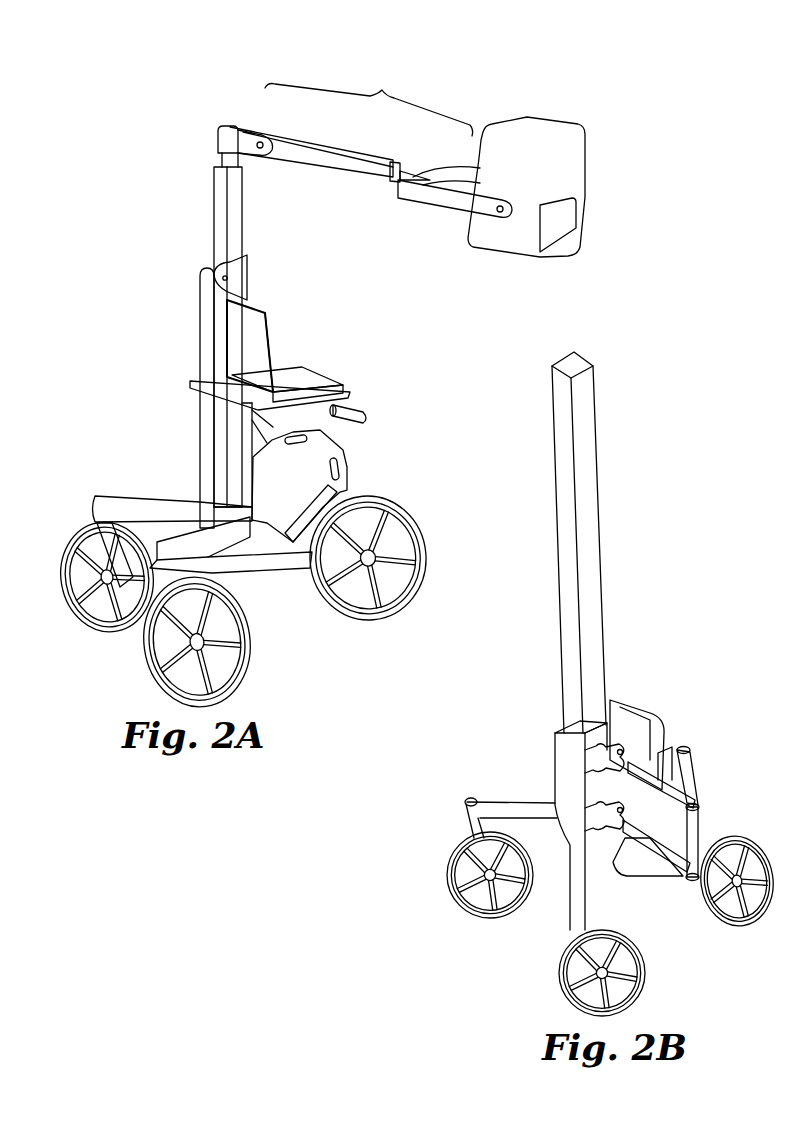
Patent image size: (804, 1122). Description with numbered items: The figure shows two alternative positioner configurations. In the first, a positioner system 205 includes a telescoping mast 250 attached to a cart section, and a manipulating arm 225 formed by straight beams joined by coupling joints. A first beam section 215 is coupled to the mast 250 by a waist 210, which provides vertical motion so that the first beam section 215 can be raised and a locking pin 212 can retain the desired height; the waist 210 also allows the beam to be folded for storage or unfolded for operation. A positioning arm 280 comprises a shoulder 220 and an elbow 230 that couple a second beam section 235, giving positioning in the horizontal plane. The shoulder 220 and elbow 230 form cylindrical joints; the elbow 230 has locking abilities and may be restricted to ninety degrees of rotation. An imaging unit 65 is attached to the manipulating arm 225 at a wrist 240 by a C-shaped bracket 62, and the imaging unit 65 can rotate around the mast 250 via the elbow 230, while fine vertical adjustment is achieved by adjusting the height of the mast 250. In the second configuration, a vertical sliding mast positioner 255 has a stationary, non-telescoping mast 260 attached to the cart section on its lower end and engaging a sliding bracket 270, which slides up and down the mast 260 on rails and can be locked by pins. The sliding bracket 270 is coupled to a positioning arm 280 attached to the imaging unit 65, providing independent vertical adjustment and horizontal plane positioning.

In FIG. 2A, the positioner system 205 is at (63, 152).
In FIG. 2A, the manipulating arm 225 is at (172, 78).
In FIG. 2A, the elbow 230 is at (256, 128).
In FIG. 2A, the shoulder 220 is at (206, 137).
In FIG. 2A, the first beam section 215 is at (224, 192).
In FIG. 2A, the waist 210 is at (200, 262).
In FIG. 2A, the locking pin 212 is at (228, 279).
In FIG. 2A, the mast 250 is at (205, 330).
In FIG. 2A, the positioning arm 280 is at (369, 97).
In FIG. 2B, the positioning arm 280 is at (705, 768).
In FIG. 2A, the second beam section 235 is at (318, 152).
In FIG. 2A, the wrist 240 is at (392, 184).
In FIG. 2A, the bracket 62 is at (447, 202).
In FIG. 2A, the imaging unit 65 is at (565, 238).
In FIG. 2B, the vertical sliding mast positioner 255 is at (654, 466).
In FIG. 2B, the stationary mast 260 is at (568, 672).
In FIG. 2B, the sliding bracket 270 is at (548, 768).